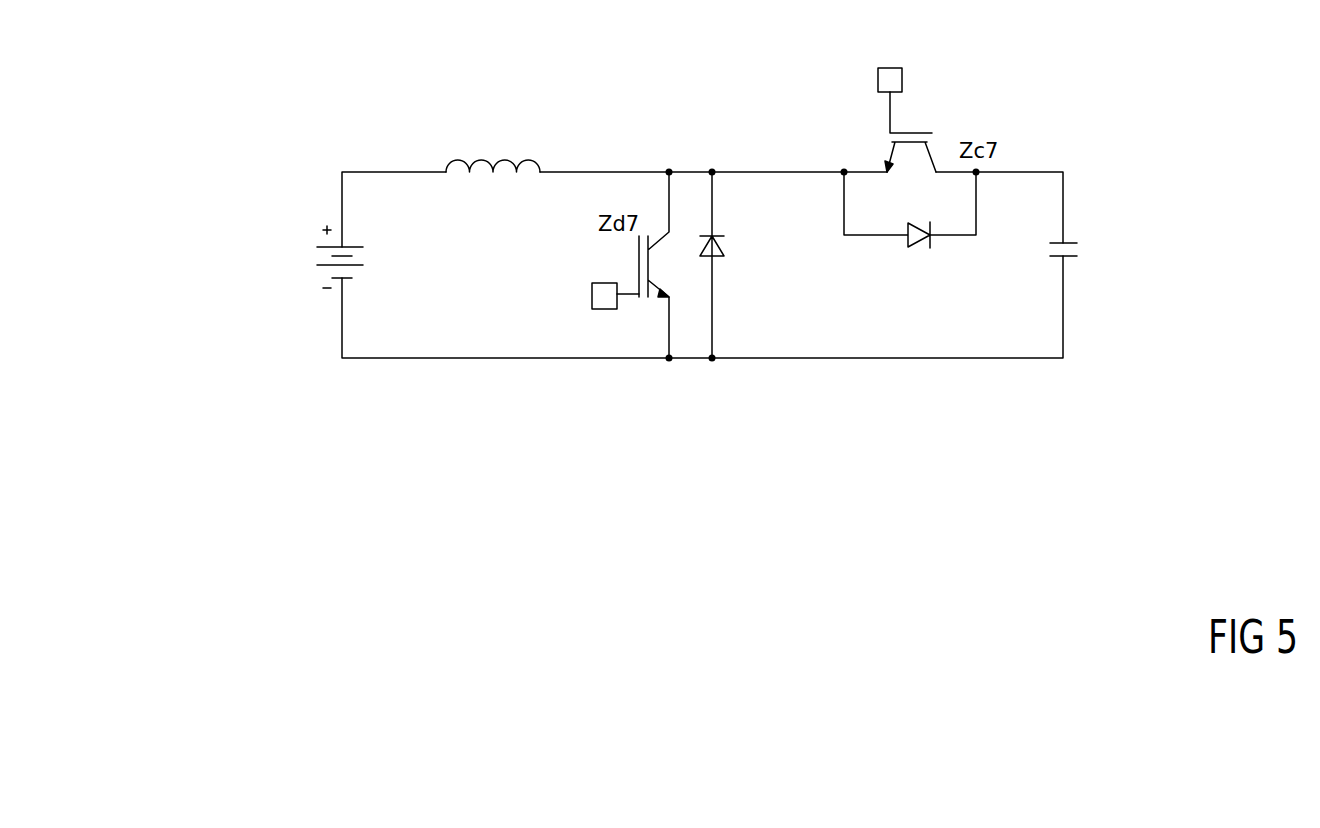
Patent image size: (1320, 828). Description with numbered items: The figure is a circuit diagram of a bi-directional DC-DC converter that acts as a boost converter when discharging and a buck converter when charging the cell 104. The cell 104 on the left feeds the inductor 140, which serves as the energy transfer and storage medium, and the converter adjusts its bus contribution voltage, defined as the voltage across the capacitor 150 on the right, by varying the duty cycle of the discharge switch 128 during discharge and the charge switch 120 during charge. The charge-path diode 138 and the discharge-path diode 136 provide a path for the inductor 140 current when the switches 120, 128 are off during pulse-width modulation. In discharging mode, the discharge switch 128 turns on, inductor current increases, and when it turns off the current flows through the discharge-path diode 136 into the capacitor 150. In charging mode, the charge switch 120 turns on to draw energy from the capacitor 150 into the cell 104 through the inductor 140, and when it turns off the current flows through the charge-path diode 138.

The cell 104 is at (317, 247).
The inductor L7 140 is at (548, 150).
The switch Zd7 128 is at (592, 285).
The diode Dc7 138 is at (737, 258).
The diode Dd7 136 is at (921, 253).
The switch Zc7 120 is at (902, 88).
The capacitor C7 150 is at (1080, 249).